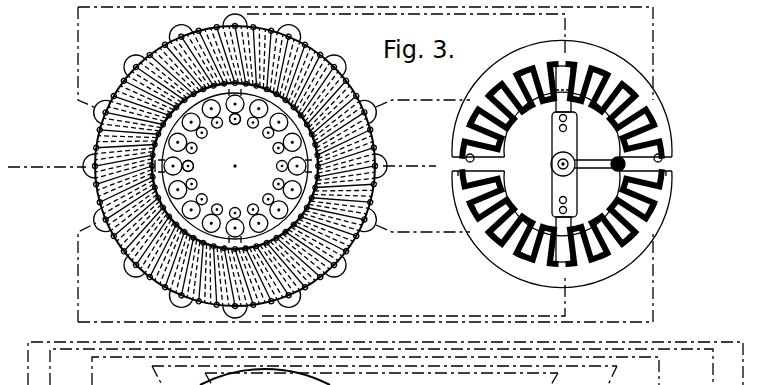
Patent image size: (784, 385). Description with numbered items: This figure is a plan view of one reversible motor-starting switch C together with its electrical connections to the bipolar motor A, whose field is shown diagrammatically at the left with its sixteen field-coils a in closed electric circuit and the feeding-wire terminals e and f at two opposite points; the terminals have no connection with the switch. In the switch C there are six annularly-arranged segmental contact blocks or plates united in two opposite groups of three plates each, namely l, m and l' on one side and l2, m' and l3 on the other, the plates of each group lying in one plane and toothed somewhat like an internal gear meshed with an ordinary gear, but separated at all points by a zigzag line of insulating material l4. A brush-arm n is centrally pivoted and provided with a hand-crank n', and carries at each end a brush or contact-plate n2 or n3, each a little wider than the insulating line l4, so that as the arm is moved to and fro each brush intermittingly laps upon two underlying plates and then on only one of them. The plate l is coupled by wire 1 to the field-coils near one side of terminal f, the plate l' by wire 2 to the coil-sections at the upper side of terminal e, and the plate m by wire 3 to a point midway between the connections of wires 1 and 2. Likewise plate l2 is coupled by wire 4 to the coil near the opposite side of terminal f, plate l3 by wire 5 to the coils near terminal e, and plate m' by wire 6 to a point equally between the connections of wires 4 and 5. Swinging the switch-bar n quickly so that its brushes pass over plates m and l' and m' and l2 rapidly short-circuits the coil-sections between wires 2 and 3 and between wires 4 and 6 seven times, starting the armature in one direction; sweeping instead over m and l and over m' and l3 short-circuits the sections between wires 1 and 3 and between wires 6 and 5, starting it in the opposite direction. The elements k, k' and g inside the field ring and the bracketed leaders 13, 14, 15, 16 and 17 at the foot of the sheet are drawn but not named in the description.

The wire 1 is at (423, 96).
The wire 2 is at (365, 57).
The wire 3 is at (406, 33).
The wire 4 is at (423, 219).
The wire 5 is at (365, 272).
The wire 6 is at (413, 297).
The connection line 13 is at (385, 363).
The connection line 14 is at (381, 367).
The connection line 15 is at (375, 371).
The connection line 16 is at (384, 375).
The connection line 17 is at (379, 377).
The machine A is at (220, 166).
The field-coils a is at (235, 166).
The bearing balls k is at (235, 166).
The small balls k' is at (212, 148).
The ring g is at (154, 168).
The feeding-wire terminal e is at (47, 158).
The feeding-wire terminal f is at (409, 157).
The motor-starting switch C is at (562, 163).
The segmental contact plate m is at (562, 124).
The segmental contact plate m' is at (562, 203).
The brush-arm n is at (564, 164).
The hand-crank n' is at (600, 156).
The brush or contact-plate n2 is at (563, 80).
The brush or contact-plate n3 is at (565, 262).
The segmental contact plate l is at (467, 151).
The segmental contact plate l' is at (656, 151).
The segmental contact plate l2 is at (463, 182).
The segmental contact plate l3 is at (658, 182).
The line of insulating material l4 is at (492, 243).